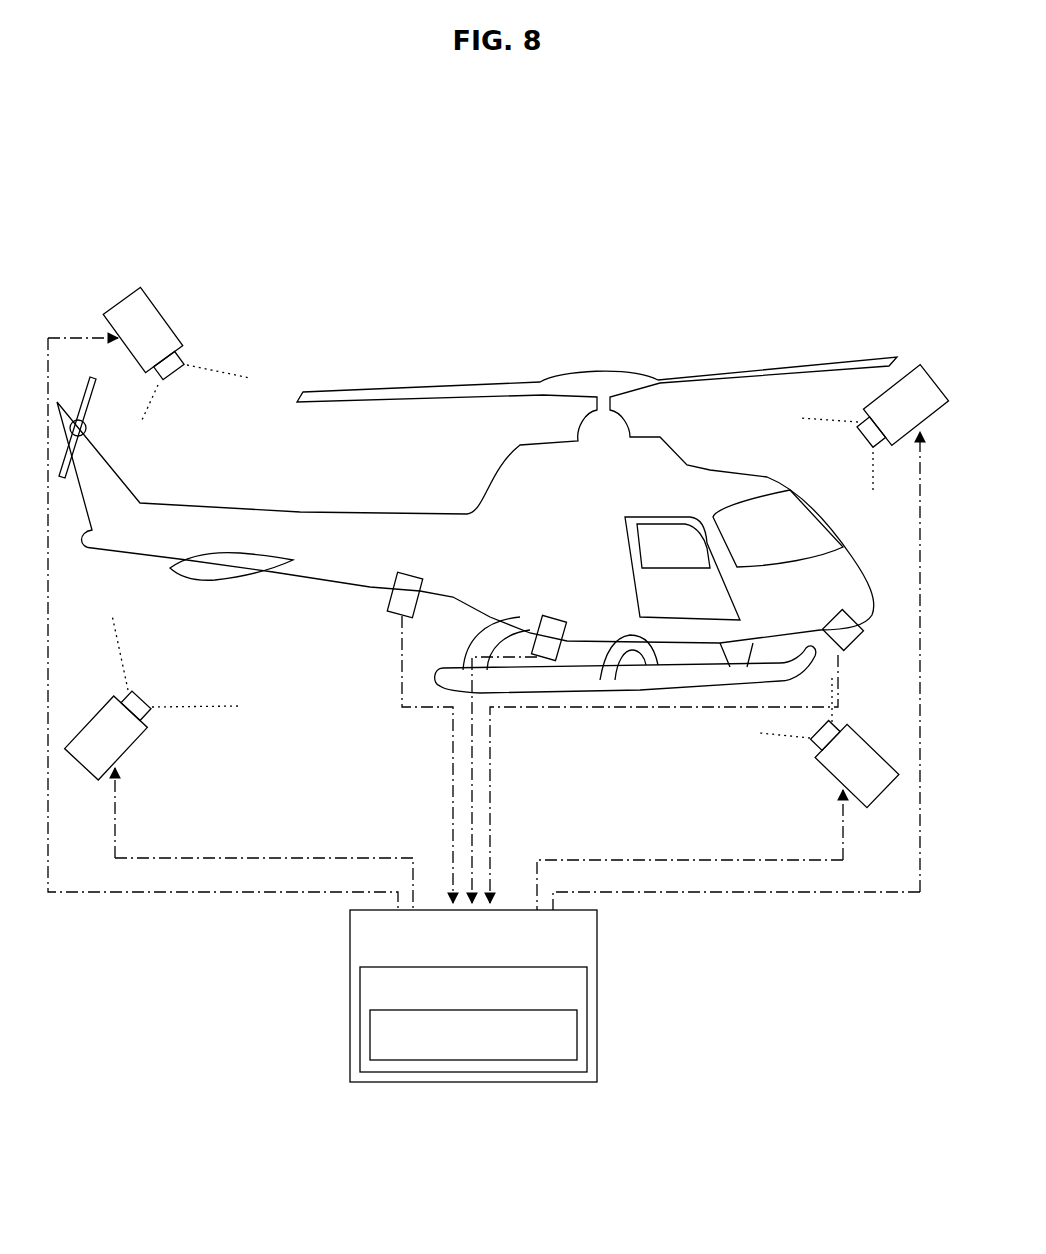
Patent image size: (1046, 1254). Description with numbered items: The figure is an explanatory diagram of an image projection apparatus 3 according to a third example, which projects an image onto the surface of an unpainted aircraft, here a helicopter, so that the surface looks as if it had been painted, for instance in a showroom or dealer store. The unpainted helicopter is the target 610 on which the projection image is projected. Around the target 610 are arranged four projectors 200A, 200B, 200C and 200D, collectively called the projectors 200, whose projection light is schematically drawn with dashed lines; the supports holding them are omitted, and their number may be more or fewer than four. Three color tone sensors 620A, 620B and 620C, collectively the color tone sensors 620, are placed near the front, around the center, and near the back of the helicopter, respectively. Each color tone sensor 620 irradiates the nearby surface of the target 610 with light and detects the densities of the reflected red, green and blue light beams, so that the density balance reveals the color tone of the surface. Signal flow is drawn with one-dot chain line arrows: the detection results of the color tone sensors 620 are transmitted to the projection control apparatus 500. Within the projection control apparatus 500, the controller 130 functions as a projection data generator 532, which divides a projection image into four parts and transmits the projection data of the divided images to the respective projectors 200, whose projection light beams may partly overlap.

The image projection apparatus 3 is at (312, 1028).
The target 610 is at (303, 507).
The color tone sensor 620 is at (605, 737).
The color tone sensor 620A is at (862, 640).
The color tone sensor 620B is at (563, 655).
The color tone sensor 620C is at (385, 602).
The projector 200 is at (503, 568).
The projector 200A is at (165, 318).
The projector 200B is at (927, 367).
The projector 200C is at (137, 747).
The projector 200D is at (887, 793).
The projection control apparatus 500 is at (598, 942).
The controller 130 is at (588, 990).
The projection data generator 532 is at (578, 1033).